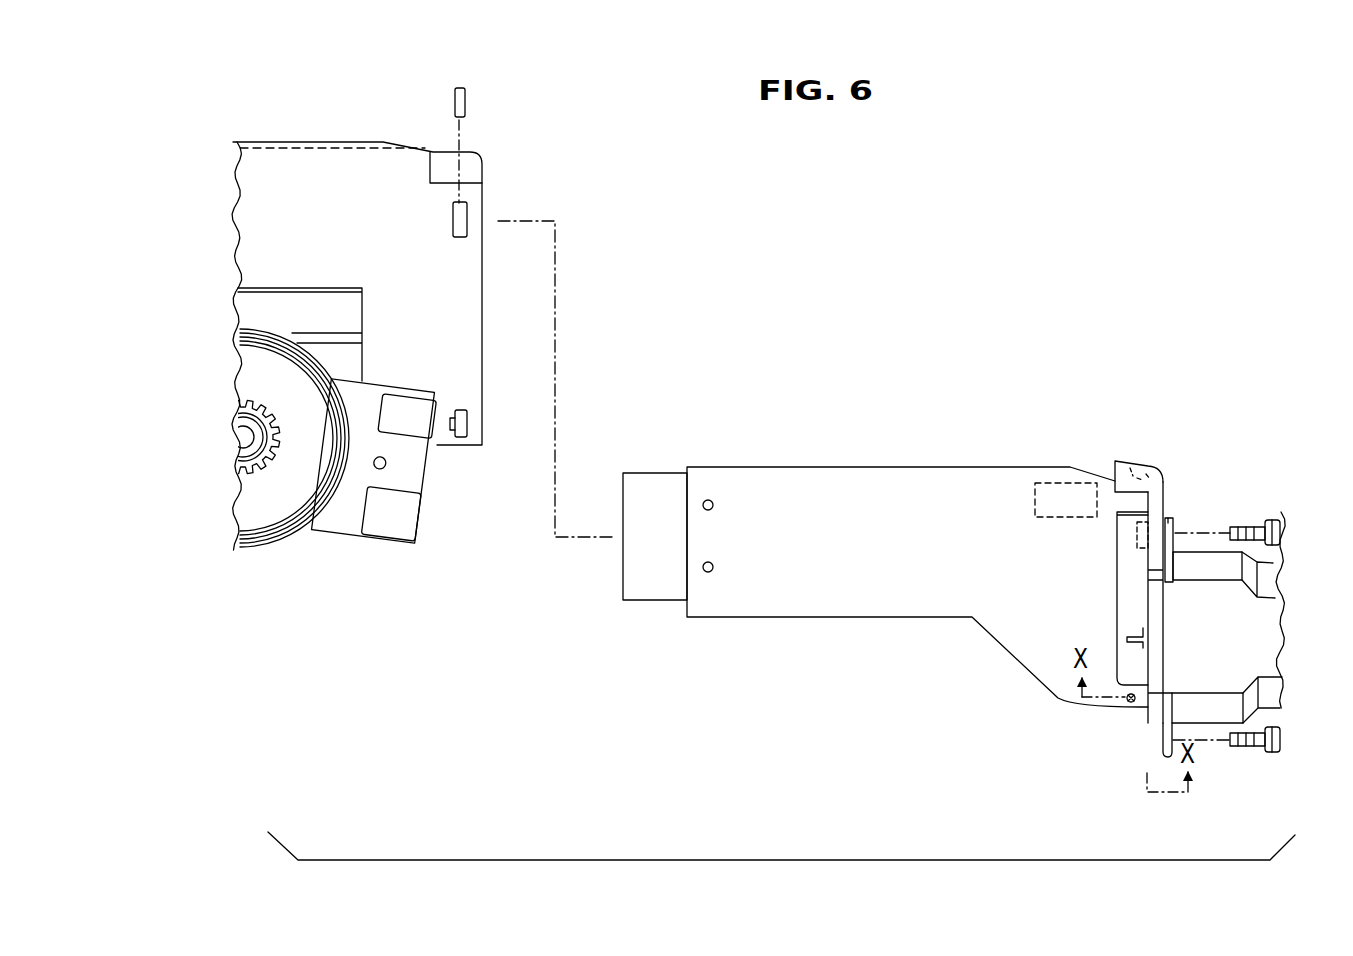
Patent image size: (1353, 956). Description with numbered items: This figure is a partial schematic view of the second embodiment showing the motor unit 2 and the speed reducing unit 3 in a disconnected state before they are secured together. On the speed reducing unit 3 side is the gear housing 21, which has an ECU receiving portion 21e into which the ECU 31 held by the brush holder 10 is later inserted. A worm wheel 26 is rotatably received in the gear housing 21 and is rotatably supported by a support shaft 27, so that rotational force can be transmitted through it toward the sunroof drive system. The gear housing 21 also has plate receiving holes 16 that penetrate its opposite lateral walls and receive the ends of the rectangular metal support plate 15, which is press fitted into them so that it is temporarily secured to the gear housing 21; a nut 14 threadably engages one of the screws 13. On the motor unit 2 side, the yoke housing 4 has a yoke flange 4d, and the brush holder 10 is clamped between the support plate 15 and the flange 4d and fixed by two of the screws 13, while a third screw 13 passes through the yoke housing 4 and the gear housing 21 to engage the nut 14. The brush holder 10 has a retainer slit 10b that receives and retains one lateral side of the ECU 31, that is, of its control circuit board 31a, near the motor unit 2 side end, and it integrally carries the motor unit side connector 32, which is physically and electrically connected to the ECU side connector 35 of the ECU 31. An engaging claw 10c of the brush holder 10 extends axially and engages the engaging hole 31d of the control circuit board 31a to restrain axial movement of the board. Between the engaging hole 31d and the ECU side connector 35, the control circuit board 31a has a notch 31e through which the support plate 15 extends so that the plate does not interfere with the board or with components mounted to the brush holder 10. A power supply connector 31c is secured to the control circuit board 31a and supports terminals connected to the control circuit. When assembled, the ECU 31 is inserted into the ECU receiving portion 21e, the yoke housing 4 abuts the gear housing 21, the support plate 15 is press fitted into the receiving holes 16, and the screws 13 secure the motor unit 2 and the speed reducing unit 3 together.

The motor unit 2 is at (1290, 602).
The speed reducing unit 3 is at (290, 545).
The yoke housing 4 is at (1272, 643).
The yoke flange 4d is at (1173, 527).
The brush holder 10 is at (1163, 500).
The retainer slit 10b is at (1133, 463).
The engaging claw 10c is at (1143, 705).
The screw 13 is at (1278, 518).
The nut 14 is at (462, 438).
The support plate 15 is at (466, 100).
The plate receiving hole 16 is at (453, 223).
The gear housing 21 is at (253, 142).
The ECU receiving portion 21e is at (342, 146).
The worm wheel 26 is at (250, 523).
The support shaft 27 is at (260, 470).
The ECU 31 is at (806, 467).
The control circuit board 31a is at (872, 618).
The power supply connector 31c is at (646, 600).
The engaging hole 31d is at (1127, 705).
The notch 31e is at (1117, 595).
The motor unit side connector 32 is at (1112, 482).
The ECU side connector 35 is at (1049, 520).